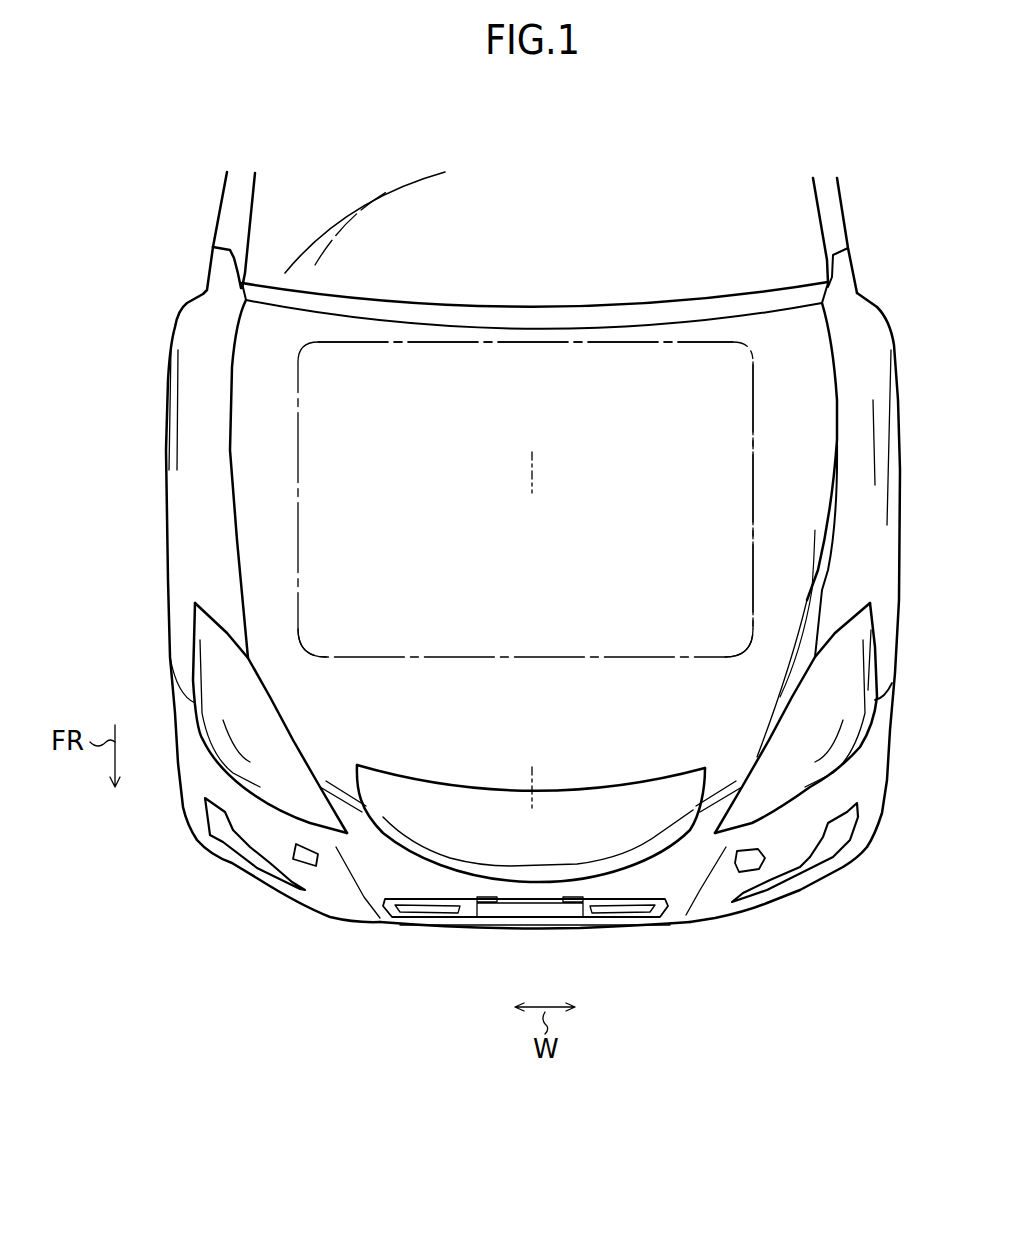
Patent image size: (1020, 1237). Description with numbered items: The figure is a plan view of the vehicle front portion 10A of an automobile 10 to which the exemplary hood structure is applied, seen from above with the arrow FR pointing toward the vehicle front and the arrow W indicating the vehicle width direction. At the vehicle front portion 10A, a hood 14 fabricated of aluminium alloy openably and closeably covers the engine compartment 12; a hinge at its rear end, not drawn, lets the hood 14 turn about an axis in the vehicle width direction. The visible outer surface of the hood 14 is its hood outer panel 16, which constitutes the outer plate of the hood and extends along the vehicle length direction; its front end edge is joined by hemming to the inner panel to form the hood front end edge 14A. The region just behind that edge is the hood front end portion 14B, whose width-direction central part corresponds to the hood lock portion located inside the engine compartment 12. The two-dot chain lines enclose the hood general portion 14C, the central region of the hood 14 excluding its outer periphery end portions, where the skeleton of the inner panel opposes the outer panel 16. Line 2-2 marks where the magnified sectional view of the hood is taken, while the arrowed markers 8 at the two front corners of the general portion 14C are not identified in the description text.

The automobile 10 is at (187, 143).
The vehicle front portion 10A is at (157, 330).
The engine compartment 12 is at (428, 363).
The hood 14 is at (537, 377).
The hood front end edge 14A is at (547, 775).
The hood front end portion 14B is at (530, 728).
The hood general portion 14C is at (707, 512).
The hood outer panel 16 is at (628, 377).
The corner portion 8 is at (383, 673).
The line 2- 2 is at (532, 452).